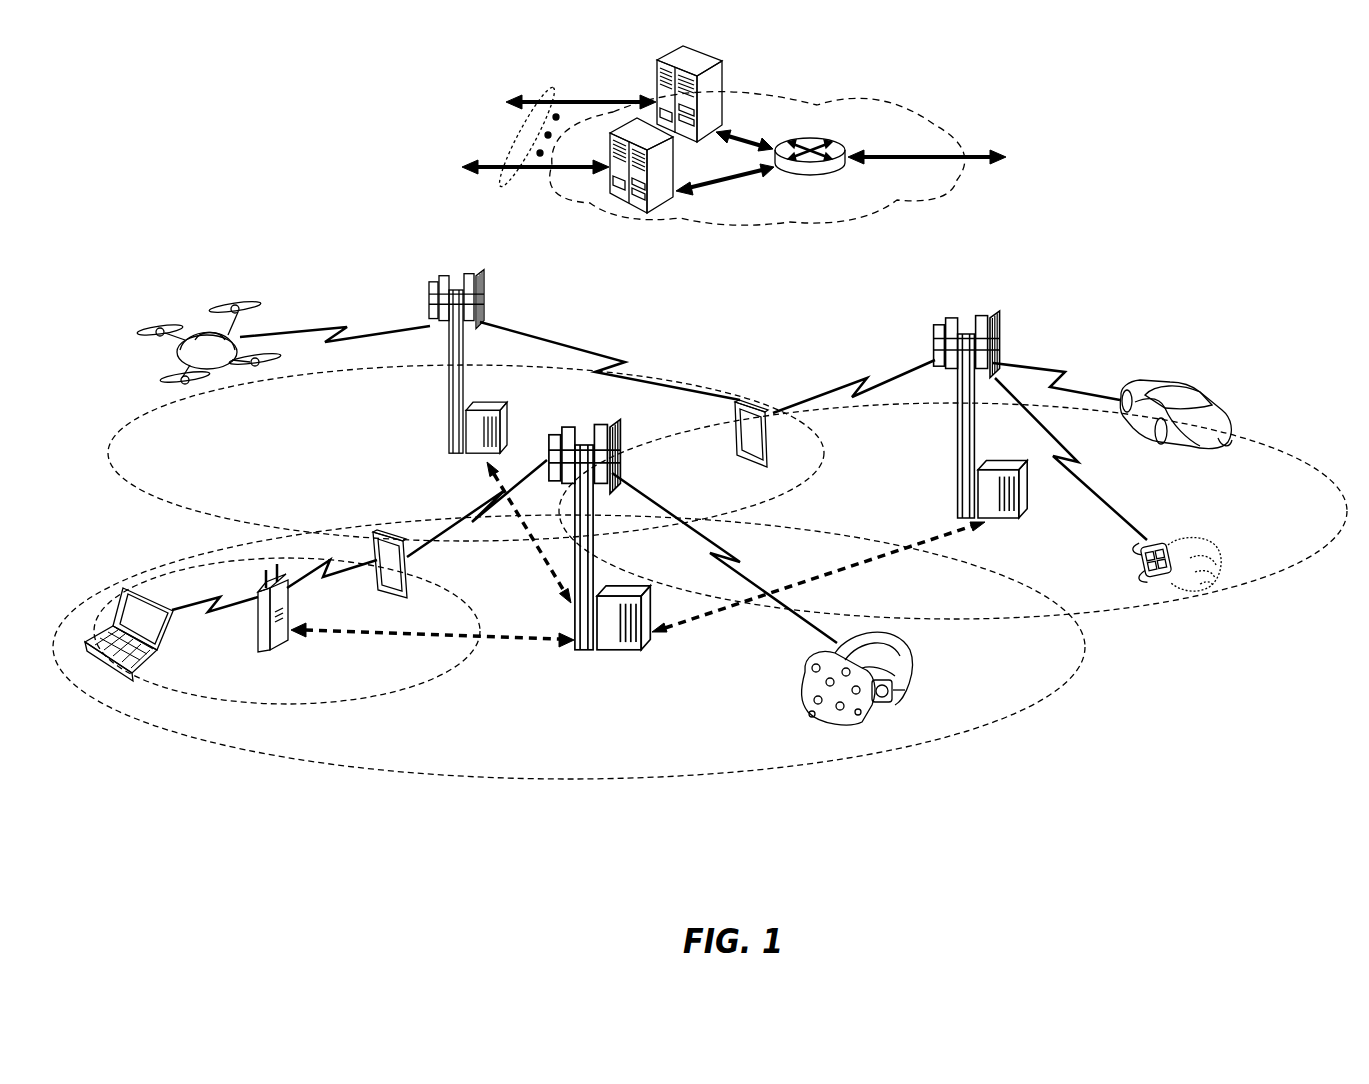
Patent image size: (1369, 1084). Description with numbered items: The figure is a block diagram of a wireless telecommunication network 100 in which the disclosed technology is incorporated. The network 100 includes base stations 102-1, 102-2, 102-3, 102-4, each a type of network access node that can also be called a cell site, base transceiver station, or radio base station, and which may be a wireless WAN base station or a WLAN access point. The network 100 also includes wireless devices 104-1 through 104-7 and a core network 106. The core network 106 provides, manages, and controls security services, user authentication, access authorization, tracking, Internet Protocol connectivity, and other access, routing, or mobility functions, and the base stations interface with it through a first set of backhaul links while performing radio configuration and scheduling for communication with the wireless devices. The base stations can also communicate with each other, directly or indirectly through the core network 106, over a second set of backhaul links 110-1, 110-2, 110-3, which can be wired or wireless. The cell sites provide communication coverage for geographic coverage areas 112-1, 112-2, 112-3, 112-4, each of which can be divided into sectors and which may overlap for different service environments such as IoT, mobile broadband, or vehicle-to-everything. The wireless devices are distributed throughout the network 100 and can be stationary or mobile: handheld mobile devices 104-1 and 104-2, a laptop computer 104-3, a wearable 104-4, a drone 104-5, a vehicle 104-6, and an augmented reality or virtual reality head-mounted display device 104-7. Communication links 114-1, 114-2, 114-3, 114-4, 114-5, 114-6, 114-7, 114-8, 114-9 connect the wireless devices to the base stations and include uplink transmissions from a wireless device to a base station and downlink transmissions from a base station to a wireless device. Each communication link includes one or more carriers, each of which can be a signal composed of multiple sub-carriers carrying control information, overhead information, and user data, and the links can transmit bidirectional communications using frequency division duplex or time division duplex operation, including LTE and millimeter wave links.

The wireless telecommunication network 100 is at (1252, 146).
The base station 102-1 is at (580, 651).
The base station 102-2 is at (447, 403).
The base station 102-3 is at (958, 442).
The base station 102-4 is at (258, 637).
The wireless device 104-1 is at (408, 575).
The wireless device 104-2 is at (733, 437).
The wireless device 104-3 is at (110, 674).
The wireless device 104-4 is at (1160, 540).
The wireless device 104-5 is at (218, 372).
The wireless device 104-6 is at (1195, 390).
The wireless device 104-7 is at (916, 657).
The core network 106 is at (842, 222).
The backhaul link 110-1 is at (325, 633).
The backhaul link 110-2 is at (883, 558).
The backhaul link 110-3 is at (543, 560).
The geographic coverage area 112-1 is at (503, 777).
The geographic coverage area 112-2 is at (387, 693).
The geographic coverage area 112-3 is at (152, 512).
The geographic coverage area 112-4 is at (1253, 438).
The communication link 114-1 is at (716, 558).
The communication link 114-2 is at (472, 504).
The communication link 114-3 is at (186, 611).
The communication link 114-4 is at (326, 576).
The communication link 114-5 is at (340, 327).
The communication link 114-6 is at (610, 358).
The communication link 114-7 is at (853, 380).
The communication link 114-8 is at (1074, 466).
The communication link 114-9 is at (1053, 373).